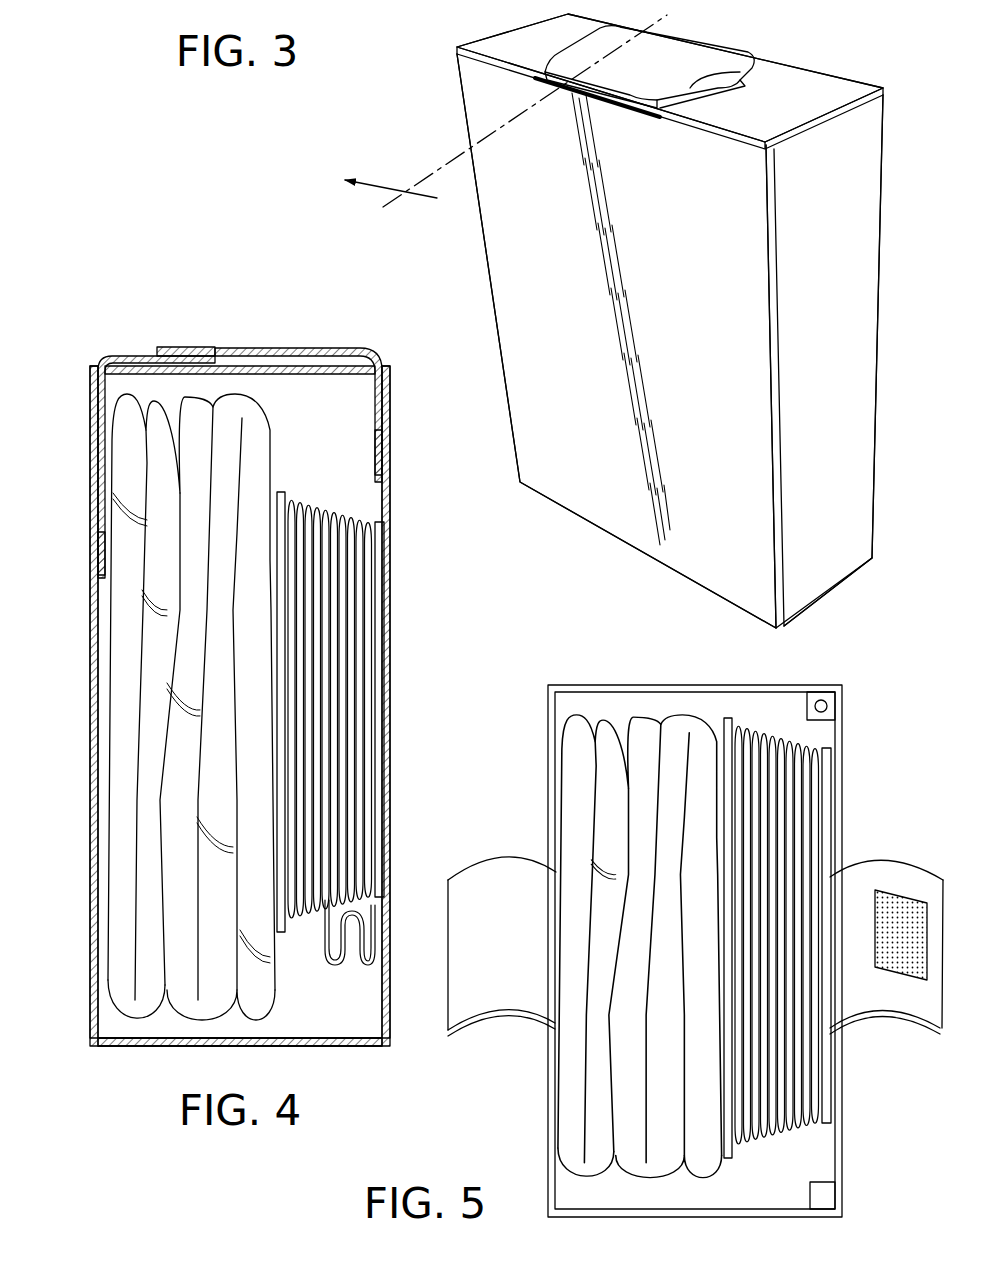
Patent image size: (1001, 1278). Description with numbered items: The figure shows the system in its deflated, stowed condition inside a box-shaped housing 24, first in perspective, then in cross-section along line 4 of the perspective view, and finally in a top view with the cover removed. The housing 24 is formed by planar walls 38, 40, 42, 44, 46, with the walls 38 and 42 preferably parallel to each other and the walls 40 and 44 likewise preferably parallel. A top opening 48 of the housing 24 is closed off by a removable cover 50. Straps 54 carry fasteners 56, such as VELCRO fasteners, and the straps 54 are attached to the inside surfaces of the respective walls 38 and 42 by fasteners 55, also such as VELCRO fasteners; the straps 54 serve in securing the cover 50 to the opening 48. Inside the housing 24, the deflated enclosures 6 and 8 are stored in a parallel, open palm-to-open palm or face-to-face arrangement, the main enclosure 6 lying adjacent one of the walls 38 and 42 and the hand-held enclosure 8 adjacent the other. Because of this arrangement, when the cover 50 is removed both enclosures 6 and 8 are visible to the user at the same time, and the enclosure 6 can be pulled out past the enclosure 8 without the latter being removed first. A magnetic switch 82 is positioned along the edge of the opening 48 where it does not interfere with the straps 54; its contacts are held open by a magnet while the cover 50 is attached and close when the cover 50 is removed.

In FIG. 3, the section line 4 is at (410, 233).
In FIG. 4, the enclosure 6 is at (146, 643).
In FIG. 5, the enclosure 6 is at (592, 1079).
In FIG. 4, the enclosure 8 is at (348, 630).
In FIG. 5, the enclosure 8 is at (810, 938).
In FIG. 3, the housing 24 is at (481, 258).
In FIG. 4, the housing 24 is at (78, 868).
In FIG. 5, the housing 24 is at (620, 684).
In FIG. 3, the wall 38 is at (701, 311).
In FIG. 4, the wall 38 is at (86, 815).
In FIG. 3, the wall 40 is at (843, 371).
In FIG. 4, the wall 42 is at (392, 762).
In FIG. 4, the wall 44 is at (335, 1003).
In FIG. 4, the wall 46 is at (123, 1046).
In FIG. 4, the top opening 48 is at (180, 388).
In FIG. 3, the cover 50 is at (842, 93).
In FIG. 4, the straps 54 is at (115, 356).
In FIG. 5, the straps 54 is at (882, 875).
In FIG. 4, the fasteners 55 is at (92, 548).
In FIG. 5, the fasteners 56 is at (500, 985).
In FIG. 5, the magnetic switch 82 is at (825, 1197).